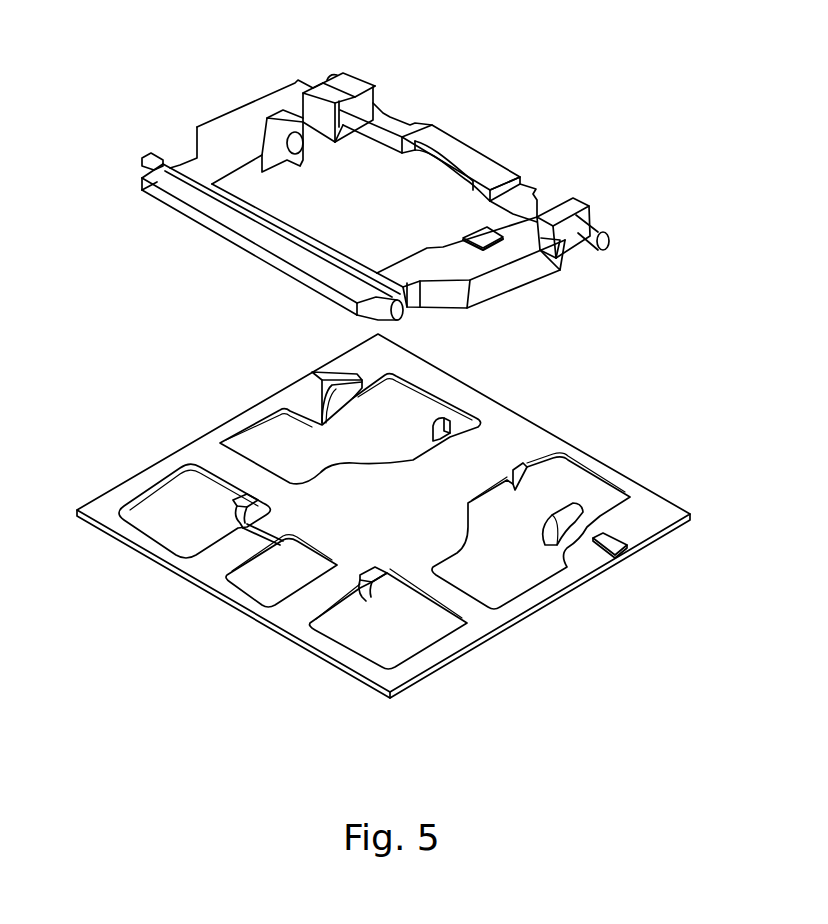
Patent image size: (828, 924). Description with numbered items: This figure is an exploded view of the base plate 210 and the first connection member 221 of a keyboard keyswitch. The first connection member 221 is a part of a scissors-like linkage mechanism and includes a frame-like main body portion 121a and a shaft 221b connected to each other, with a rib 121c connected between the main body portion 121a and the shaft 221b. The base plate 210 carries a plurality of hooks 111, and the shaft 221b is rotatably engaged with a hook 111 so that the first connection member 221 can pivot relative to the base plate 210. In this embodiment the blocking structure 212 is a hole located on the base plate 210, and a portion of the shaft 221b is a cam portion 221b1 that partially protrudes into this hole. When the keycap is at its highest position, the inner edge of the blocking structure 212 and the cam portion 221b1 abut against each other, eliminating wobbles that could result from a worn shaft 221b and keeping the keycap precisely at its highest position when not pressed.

The first connection member 221 is at (429, 174).
The main body portion 121a is at (283, 107).
The shaft 221b is at (633, 249).
The cam portion 221b1 is at (605, 247).
The rib 121c is at (577, 253).
The base plate 210 is at (361, 516).
The hook 111 is at (572, 520).
The blocking structure 212 is at (620, 553).